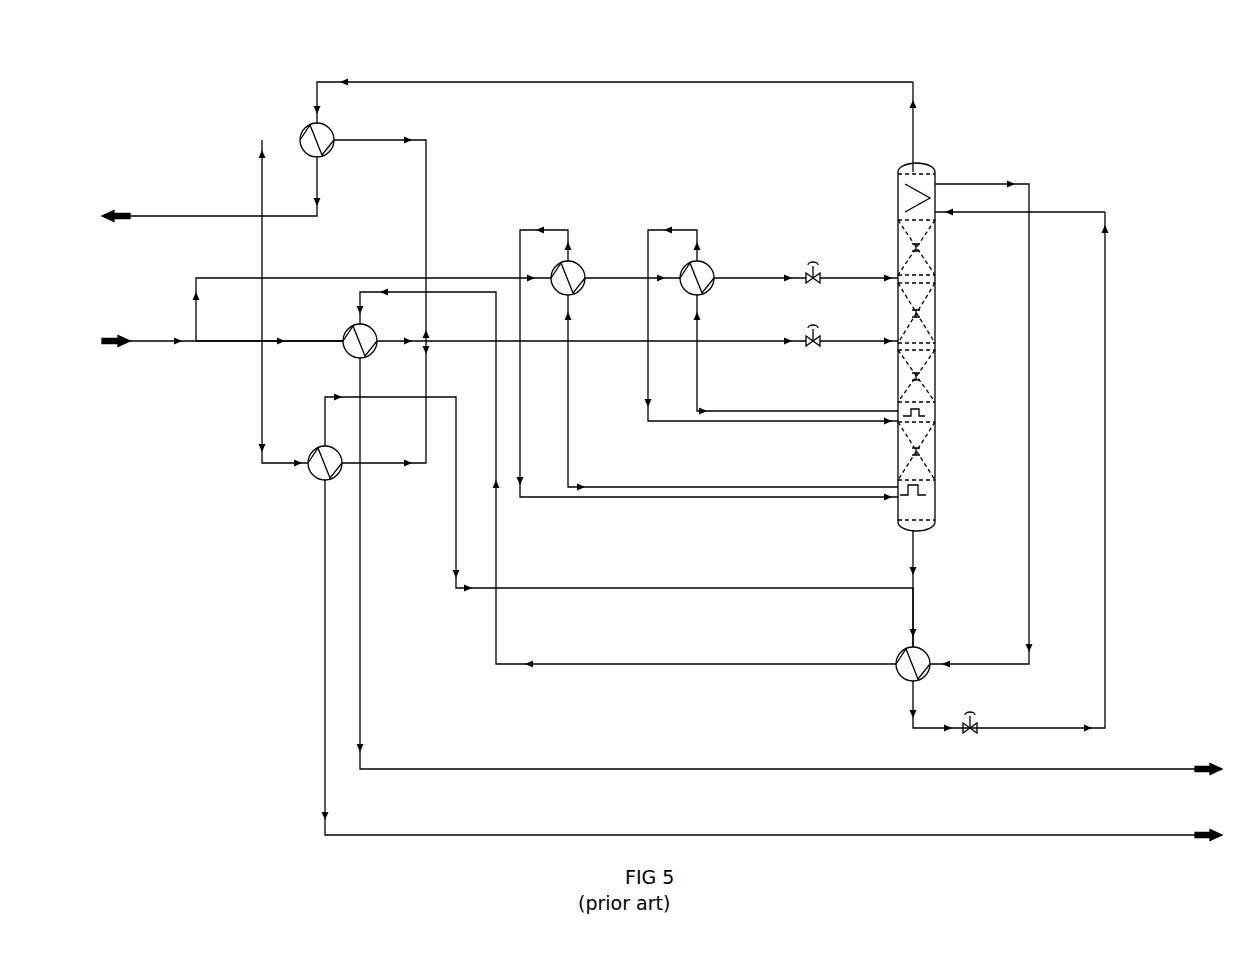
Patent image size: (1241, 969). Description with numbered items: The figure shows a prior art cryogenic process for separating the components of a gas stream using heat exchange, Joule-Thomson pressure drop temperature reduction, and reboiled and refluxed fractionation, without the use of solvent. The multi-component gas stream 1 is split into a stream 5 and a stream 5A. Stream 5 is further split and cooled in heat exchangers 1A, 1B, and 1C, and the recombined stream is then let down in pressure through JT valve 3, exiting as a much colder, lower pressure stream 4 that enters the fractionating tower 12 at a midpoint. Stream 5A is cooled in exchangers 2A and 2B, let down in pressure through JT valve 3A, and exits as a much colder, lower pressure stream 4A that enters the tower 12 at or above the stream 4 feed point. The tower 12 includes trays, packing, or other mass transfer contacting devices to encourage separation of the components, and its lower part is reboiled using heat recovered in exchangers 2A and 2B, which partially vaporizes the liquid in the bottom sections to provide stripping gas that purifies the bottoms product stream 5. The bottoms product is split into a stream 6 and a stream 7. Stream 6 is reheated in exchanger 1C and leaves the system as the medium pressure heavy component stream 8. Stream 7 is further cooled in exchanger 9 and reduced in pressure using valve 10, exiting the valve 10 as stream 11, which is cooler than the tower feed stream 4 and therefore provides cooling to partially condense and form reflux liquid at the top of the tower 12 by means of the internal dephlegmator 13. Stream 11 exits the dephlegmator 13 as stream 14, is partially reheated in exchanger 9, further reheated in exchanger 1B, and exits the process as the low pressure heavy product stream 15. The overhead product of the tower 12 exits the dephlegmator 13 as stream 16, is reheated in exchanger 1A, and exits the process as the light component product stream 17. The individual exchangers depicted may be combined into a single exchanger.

The multi-component gas stream 1 is at (222, 331).
The heat exchanger 1A is at (337, 131).
The heat exchanger 1B is at (346, 328).
The heat exchanger 1C is at (311, 447).
The heat exchanger 2A is at (587, 268).
The heat exchanger 2B is at (710, 268).
The JT valve 3 is at (818, 351).
The JT valve 3A is at (819, 288).
The stream 4 is at (662, 331).
The stream 4A is at (859, 268).
The stream 5 is at (563, 481).
The stream 5A is at (500, 296).
The stream 6 is at (619, 493).
The stream 7 is at (921, 617).
The medium pressure heavy component stream 8 is at (772, 660).
The exchanger 9 is at (899, 683).
The valve 10 is at (976, 737).
The stream 11 is at (1020, 200).
The fractionating tower 12 is at (940, 278).
The internal dephlegmator 13 is at (902, 200).
The stream 14 is at (981, 424).
The low pressure heavy product stream 15 is at (790, 566).
The overhead product stream 16 is at (614, 89).
The light component product stream 17 is at (211, 189).